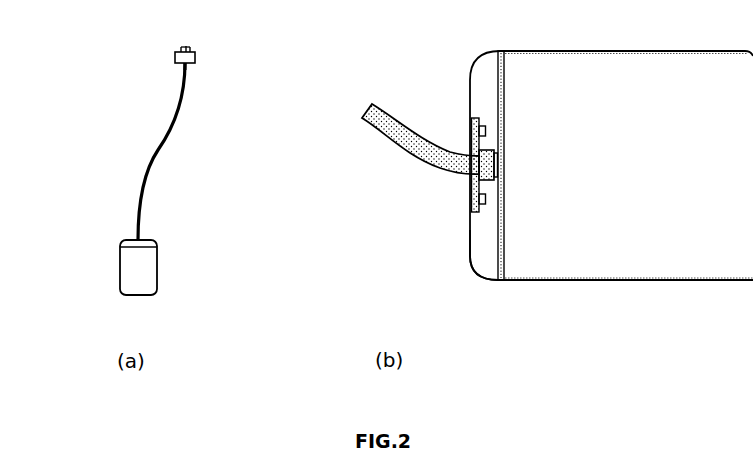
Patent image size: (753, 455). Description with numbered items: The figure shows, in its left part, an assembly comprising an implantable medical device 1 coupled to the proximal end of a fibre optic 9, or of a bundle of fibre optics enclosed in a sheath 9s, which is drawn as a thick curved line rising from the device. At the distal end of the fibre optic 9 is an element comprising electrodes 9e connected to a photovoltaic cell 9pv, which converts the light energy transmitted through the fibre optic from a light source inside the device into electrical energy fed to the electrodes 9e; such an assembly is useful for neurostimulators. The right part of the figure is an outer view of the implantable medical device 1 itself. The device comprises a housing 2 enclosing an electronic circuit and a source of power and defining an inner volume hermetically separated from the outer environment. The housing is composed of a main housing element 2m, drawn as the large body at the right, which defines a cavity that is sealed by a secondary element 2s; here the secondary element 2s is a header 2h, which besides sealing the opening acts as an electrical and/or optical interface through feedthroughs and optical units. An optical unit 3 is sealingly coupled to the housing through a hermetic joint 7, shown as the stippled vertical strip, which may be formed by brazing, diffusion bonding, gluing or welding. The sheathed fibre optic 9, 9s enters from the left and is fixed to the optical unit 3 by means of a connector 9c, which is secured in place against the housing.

The implantable medical device 1 is at (162, 273).
The housing 2 is at (646, 187).
The main housing element 2m is at (622, 282).
The secondary element 2s is at (436, 274).
The header 2h is at (470, 267).
The optical unit 3 is at (500, 162).
The hermetic joint 7 is at (502, 50).
The fibre optic 9 is at (158, 143).
The sheath 9s is at (430, 166).
The connector 9c is at (470, 147).
The electrodes 9e is at (192, 50).
The photovoltaic cell 9pv is at (190, 65).